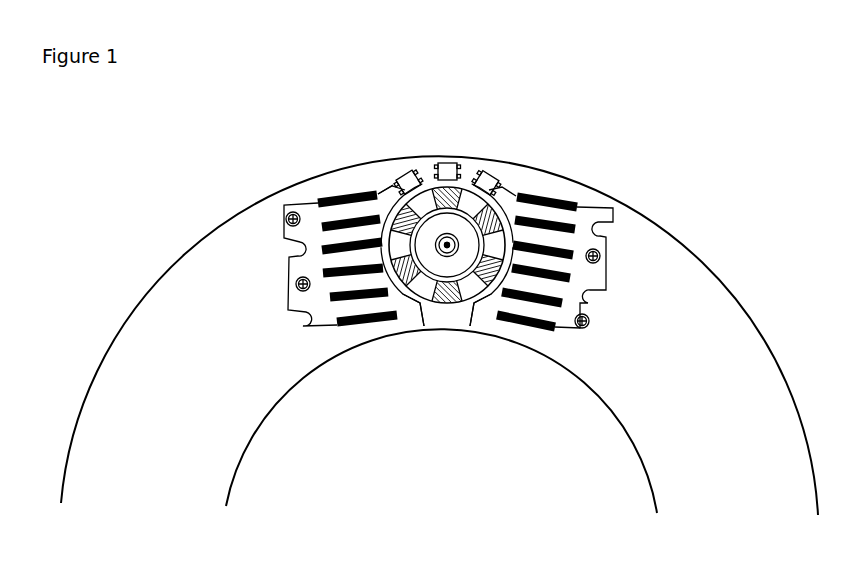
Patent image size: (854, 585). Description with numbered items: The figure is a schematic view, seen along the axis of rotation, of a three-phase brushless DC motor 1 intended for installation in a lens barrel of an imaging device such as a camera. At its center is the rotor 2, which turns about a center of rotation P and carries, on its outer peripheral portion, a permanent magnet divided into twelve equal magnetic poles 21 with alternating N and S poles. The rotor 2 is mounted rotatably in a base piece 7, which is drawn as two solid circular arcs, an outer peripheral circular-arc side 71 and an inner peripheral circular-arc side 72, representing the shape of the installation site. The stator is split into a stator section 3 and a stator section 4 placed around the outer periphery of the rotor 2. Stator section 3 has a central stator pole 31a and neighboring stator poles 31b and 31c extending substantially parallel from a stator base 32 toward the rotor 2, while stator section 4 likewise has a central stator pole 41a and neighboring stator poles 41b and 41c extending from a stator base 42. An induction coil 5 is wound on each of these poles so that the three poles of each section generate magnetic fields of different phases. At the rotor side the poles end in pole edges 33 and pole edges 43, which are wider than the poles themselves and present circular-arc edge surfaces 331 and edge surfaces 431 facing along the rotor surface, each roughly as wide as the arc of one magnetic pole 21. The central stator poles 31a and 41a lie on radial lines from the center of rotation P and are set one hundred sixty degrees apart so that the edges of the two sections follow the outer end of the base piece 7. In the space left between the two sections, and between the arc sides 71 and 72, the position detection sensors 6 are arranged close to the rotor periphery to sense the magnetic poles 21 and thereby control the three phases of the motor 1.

The three-phase brushless DC motor 1 is at (265, 101).
The rotor 2 is at (447, 303).
The magnetic poles 21 is at (437, 189).
The stator section 3 is at (600, 303).
The central stator pole 31a is at (571, 273).
The stator pole 31b is at (545, 314).
The stator pole 31c is at (572, 222).
The stator base 32 is at (605, 240).
The pole edges 33 is at (507, 193).
The edge surfaces 331 is at (466, 325).
The stator section 4 is at (296, 300).
The central stator pole 41a is at (327, 263).
The stator pole 41b is at (332, 313).
The stator pole 41c is at (321, 216).
The stator base 42 is at (295, 238).
The pole edges 43 is at (382, 192).
The edge surfaces 431 is at (425, 325).
The induction coil 5 is at (350, 327).
The position detection sensor 6 is at (407, 177).
The base piece 7 is at (439, 335).
The outer peripheral circular-arc side 71 is at (183, 261).
The inner peripheral circular-arc side 72 is at (283, 393).
The center of rotation P is at (447, 247).